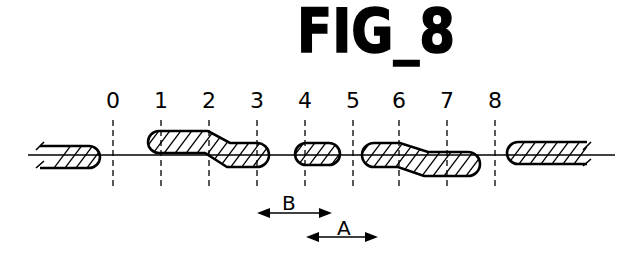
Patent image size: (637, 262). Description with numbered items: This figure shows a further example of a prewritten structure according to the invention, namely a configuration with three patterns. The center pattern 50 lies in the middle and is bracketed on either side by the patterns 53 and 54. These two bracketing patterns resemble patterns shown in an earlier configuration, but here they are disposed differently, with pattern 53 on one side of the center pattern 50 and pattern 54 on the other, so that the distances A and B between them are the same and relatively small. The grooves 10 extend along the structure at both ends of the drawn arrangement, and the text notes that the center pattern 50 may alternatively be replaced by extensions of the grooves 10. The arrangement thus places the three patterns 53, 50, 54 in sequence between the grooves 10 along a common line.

The groove 10 is at (66, 146).
The pattern 53 is at (238, 143).
The center pattern 50 is at (312, 143).
The pattern 54 is at (432, 152).